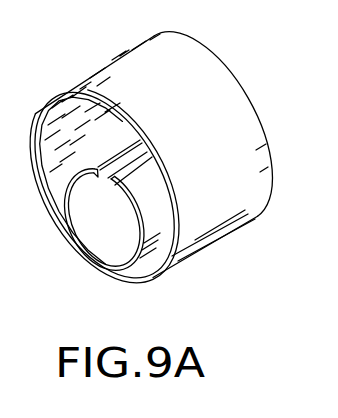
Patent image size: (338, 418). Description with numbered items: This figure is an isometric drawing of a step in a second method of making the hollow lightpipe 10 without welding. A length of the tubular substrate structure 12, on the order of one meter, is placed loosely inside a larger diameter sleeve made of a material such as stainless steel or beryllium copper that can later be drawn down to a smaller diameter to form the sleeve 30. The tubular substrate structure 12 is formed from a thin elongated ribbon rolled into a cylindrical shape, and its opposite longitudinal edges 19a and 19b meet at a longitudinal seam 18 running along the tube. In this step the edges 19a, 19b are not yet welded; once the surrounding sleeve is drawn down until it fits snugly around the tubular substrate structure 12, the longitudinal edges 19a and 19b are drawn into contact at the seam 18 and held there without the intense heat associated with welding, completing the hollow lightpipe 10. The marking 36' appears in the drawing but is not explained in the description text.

The hollow lightpipe 10 is at (283, 88).
The tubular substrate structure 12 is at (68, 209).
The longitudinal seam 18 is at (100, 165).
The longitudinal edge 19a is at (97, 180).
The longitudinal edge 19b is at (103, 177).
The sleeve 30 is at (255, 235).
The outer surface 36' is at (160, 90).